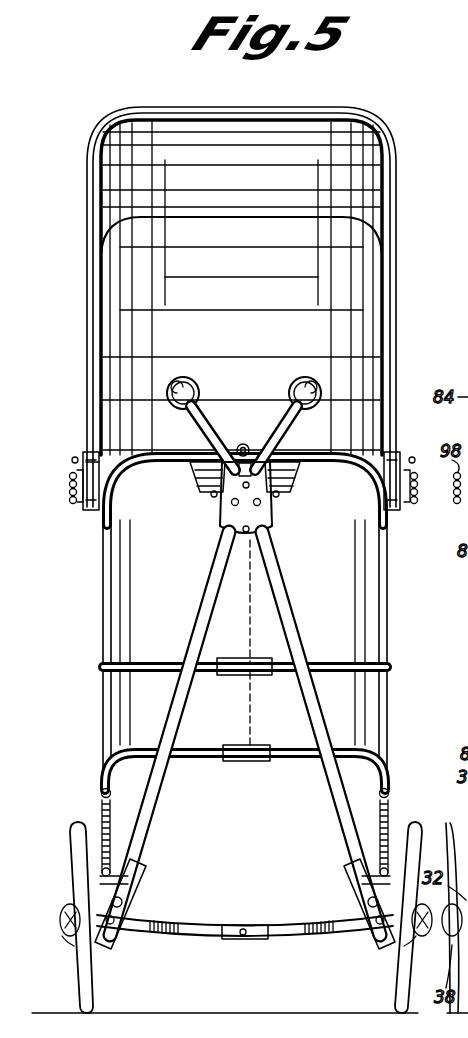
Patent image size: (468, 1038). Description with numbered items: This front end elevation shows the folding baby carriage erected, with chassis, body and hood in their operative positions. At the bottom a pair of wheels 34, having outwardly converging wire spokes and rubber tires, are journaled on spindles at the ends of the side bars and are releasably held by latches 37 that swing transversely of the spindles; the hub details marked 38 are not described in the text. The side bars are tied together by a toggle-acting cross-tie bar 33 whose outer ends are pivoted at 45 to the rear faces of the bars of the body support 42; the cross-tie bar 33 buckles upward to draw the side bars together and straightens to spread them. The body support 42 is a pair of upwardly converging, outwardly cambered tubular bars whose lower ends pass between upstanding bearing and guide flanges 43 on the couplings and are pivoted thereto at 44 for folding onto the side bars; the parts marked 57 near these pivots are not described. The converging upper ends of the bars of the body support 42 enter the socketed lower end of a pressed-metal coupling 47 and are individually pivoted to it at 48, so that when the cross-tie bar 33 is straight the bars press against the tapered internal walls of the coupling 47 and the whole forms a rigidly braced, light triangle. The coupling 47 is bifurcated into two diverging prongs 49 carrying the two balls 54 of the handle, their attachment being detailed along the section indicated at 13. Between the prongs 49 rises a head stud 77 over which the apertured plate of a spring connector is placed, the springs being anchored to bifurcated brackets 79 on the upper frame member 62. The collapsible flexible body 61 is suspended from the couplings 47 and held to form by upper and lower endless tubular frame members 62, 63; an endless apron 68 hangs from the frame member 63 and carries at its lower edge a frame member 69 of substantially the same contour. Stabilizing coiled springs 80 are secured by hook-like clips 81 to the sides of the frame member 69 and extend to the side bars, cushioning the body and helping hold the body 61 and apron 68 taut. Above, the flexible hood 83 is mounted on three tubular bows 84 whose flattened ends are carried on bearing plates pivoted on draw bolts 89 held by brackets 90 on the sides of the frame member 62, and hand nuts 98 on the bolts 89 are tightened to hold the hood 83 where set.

The section line / viewing direction 13 is at (316, 380).
The cross-tie bar 33 is at (188, 918).
The wheel 34 is at (74, 842).
The latch 37 is at (80, 916).
The hub cap 38 is at (68, 938).
The body support 42 is at (214, 578).
The bearing and guide flange 43 is at (100, 887).
The pivot 44 is at (127, 880).
The pivot 45 is at (106, 938).
The coupling 47 is at (270, 524).
The pivot 48 is at (231, 502).
The prong 49 is at (210, 422).
The ball 54 is at (190, 380).
The spring anchor pin 57 is at (112, 866).
The collapsible flexible body 61 is at (140, 613).
The upper frame member 62 is at (112, 516).
The lower frame member 63 is at (383, 660).
The apron 68 is at (125, 700).
The frame member 69 is at (384, 766).
The head stud 77 is at (243, 443).
The bifurcated bracket 79 is at (198, 474).
The coiled spring 80 is at (100, 814).
The hook-like clip 81 is at (100, 788).
The hood 83 is at (226, 132).
The bow 84 is at (292, 118).
The draw bolt 89 is at (84, 510).
The bracket 90 is at (78, 500).
The hand nut 98 is at (75, 470).